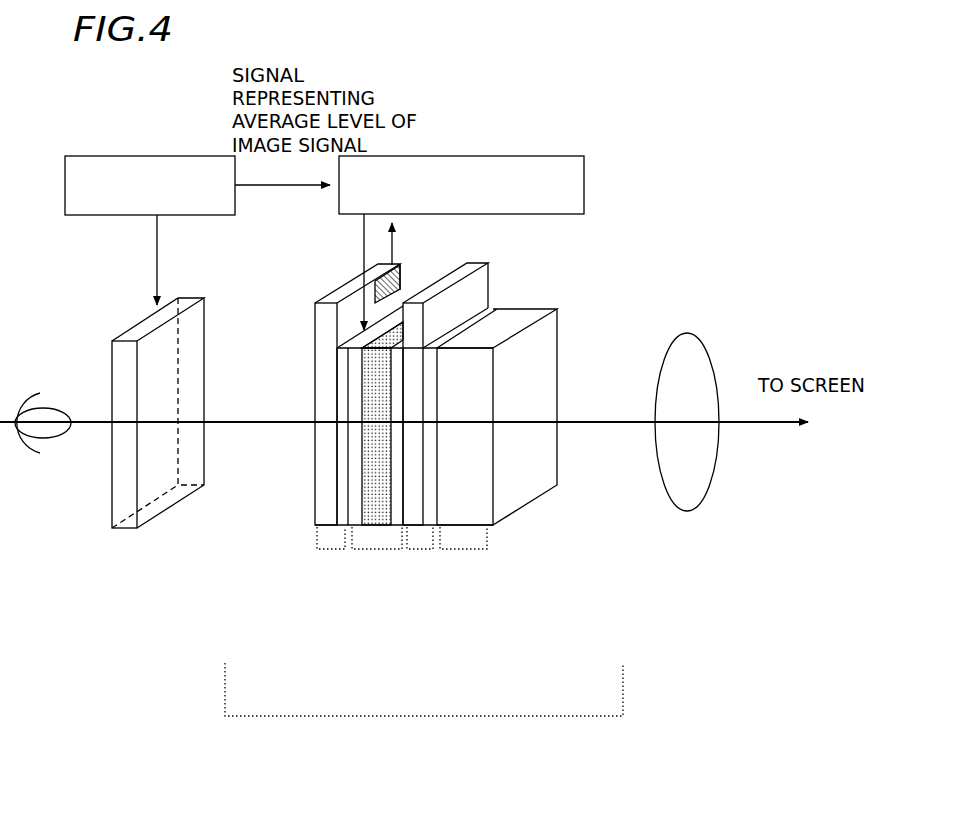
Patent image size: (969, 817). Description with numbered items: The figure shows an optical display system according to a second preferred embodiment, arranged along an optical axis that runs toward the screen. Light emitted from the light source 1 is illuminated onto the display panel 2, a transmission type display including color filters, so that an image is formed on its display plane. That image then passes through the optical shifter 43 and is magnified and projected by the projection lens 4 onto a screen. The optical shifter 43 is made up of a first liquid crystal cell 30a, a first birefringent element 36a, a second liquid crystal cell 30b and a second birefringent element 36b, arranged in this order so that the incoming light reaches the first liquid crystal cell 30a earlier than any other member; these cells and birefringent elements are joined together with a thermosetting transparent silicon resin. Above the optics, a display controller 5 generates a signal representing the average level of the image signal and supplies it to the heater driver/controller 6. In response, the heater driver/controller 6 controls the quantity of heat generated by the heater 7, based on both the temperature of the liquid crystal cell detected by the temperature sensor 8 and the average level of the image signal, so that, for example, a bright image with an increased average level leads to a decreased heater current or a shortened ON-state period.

The light source 1 is at (25, 395).
The display panel 2 is at (112, 530).
The projection lens 4 is at (680, 511).
The display controller 5 is at (115, 155).
The heater driver/controller 6 is at (447, 155).
The heater 7 is at (380, 485).
The temperature sensor 8 is at (400, 279).
The first liquid crystal cell 30a is at (325, 563).
The second liquid crystal cell 30b is at (427, 563).
The first birefringent element 36a is at (377, 563).
The second birefringent element 36b is at (473, 563).
The optical shifter 43 is at (427, 717).